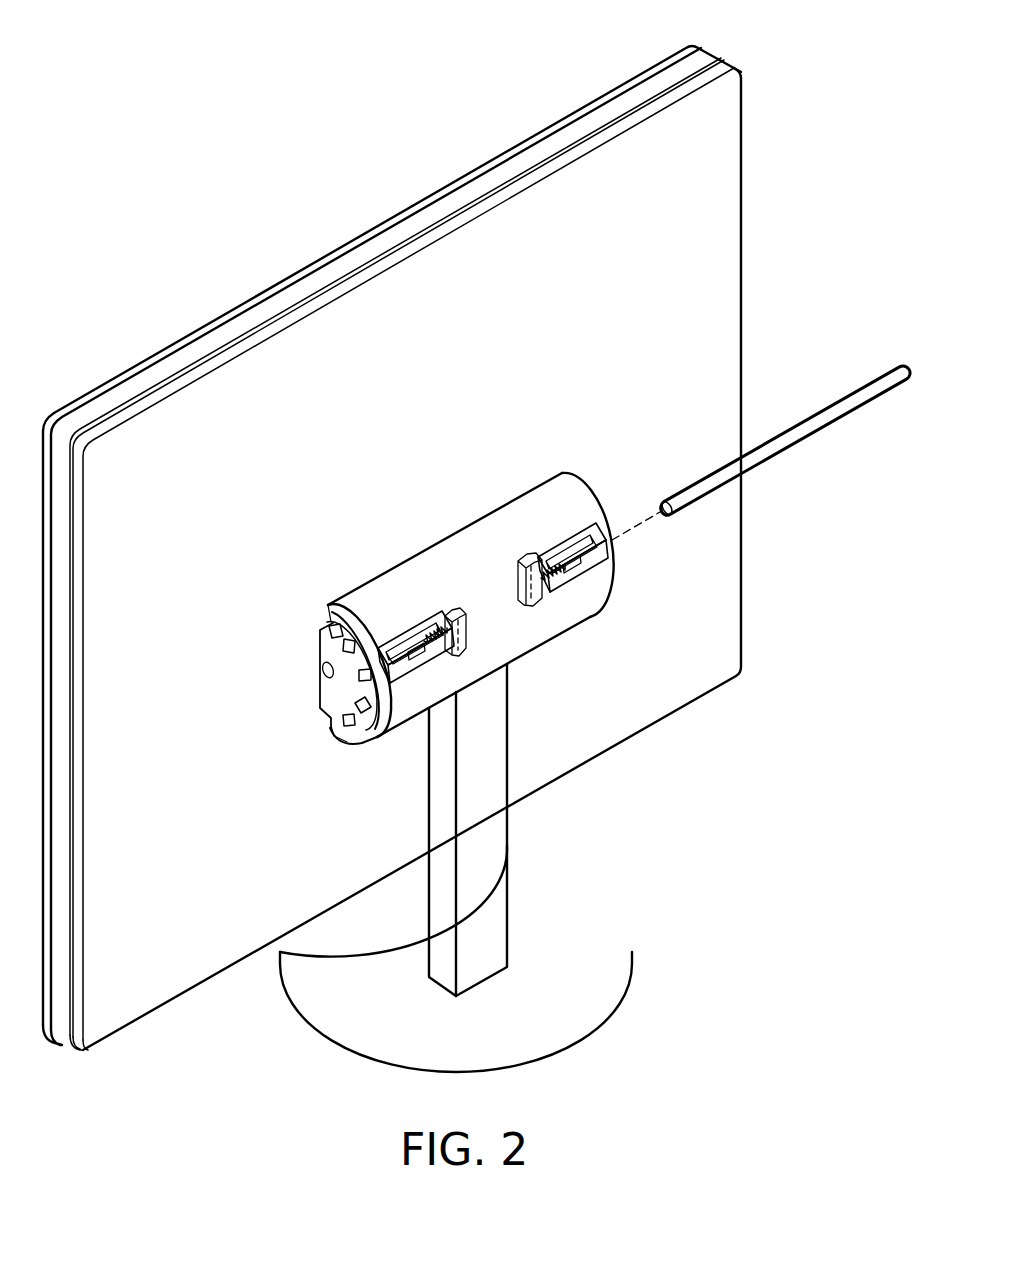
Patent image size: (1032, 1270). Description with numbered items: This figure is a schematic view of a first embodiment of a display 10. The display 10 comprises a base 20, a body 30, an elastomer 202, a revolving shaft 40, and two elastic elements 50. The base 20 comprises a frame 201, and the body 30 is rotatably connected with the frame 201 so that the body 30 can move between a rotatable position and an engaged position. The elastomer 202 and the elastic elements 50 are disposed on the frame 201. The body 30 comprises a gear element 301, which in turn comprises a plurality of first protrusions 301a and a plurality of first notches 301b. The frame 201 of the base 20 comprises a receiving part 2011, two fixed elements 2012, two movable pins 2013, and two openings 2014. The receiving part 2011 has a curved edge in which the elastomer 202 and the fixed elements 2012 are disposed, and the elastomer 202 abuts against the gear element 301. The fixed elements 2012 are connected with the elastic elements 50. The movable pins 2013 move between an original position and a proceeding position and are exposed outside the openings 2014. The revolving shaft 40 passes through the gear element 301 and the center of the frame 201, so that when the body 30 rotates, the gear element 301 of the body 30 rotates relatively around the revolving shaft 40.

The display 10 is at (146, 136).
The base 20 is at (612, 948).
The body 30 is at (720, 573).
The revolving shaft 40 is at (826, 416).
The elastic elements 50 is at (400, 662).
The frame 201 is at (482, 548).
The elastomer 202 is at (330, 737).
The receiving part 2011 is at (362, 742).
The fixed elements 2012 is at (450, 625).
The movable pins 2013 is at (380, 647).
The openings 2014 is at (425, 676).
The gear element 301 is at (325, 687).
The first protrusions 301a is at (322, 622).
The first notches 301b is at (320, 646).